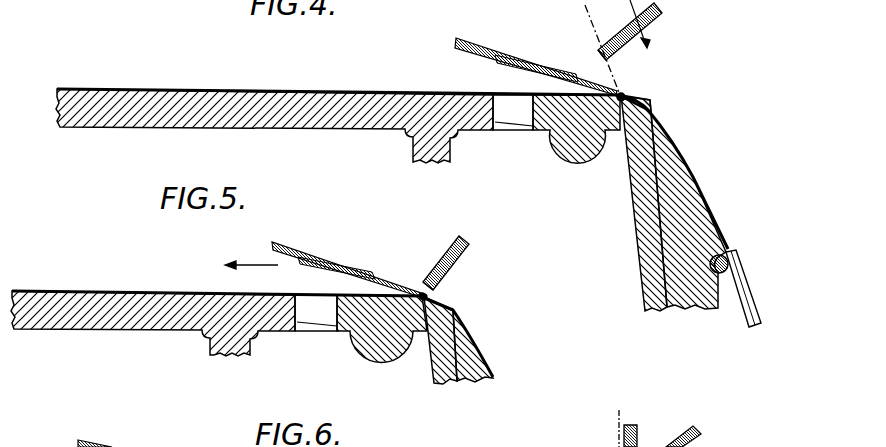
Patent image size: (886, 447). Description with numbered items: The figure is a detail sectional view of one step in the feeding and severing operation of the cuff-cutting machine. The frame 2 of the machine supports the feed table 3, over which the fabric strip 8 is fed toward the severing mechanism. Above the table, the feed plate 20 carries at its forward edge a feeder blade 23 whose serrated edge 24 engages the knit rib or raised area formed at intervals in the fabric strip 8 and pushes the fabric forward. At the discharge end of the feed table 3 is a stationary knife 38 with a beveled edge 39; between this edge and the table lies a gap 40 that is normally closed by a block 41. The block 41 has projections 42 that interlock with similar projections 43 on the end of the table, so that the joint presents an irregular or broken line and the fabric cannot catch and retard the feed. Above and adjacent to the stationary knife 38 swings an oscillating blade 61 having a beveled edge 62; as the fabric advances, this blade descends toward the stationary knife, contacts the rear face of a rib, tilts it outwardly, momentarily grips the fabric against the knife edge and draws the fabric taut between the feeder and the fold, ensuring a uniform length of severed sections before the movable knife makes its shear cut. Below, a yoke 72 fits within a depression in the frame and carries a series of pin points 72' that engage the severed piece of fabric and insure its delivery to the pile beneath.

In FIG. 4, the frame 2 is at (690, 176).
In FIG. 4, the feed table 3 is at (118, 114).
In FIG. 5, the feed table 3 is at (84, 323).
In FIG. 4, the fabric strip 8 is at (143, 90).
In FIG. 5, the fabric strip 8 is at (102, 292).
In FIG. 4, the plate 20 is at (570, 66).
In FIG. 5, the plate 20 is at (376, 272).
In FIG. 6, the plate 20 is at (198, 446).
In FIG. 4, the feeder blade 23 is at (618, 95).
In FIG. 5, the feeder blade 23 is at (418, 295).
In FIG. 4, the serrated edge 24 is at (617, 93).
In FIG. 5, the serrated edge 24 is at (421, 295).
In FIG. 4, the stationary knife 38 is at (652, 150).
In FIG. 5, the stationary knife 38 is at (436, 383).
In FIG. 4, the beveled edge 39 is at (626, 100).
In FIG. 5, the beveled edge 39 is at (437, 298).
In FIG. 4, the gap 40 is at (646, 108).
In FIG. 5, the gap 40 is at (457, 313).
In FIG. 4, the block 41 is at (555, 122).
In FIG. 5, the block 41 is at (385, 364).
In FIG. 4, the projections 42 is at (525, 113).
In FIG. 5, the projections 42 is at (320, 315).
In FIG. 4, the projections 43 is at (517, 128).
In FIG. 5, the projections 43 is at (305, 325).
In FIG. 4, the oscillating blade 61 is at (632, 32).
In FIG. 5, the oscillating blade 61 is at (436, 285).
In FIG. 4, the beveled edge 62 is at (602, 60).
In FIG. 5, the beveled edge 62 is at (434, 294).
In FIG. 4, the yoke 72 is at (719, 300).
In FIG. 4, the pin points 72' is at (738, 254).